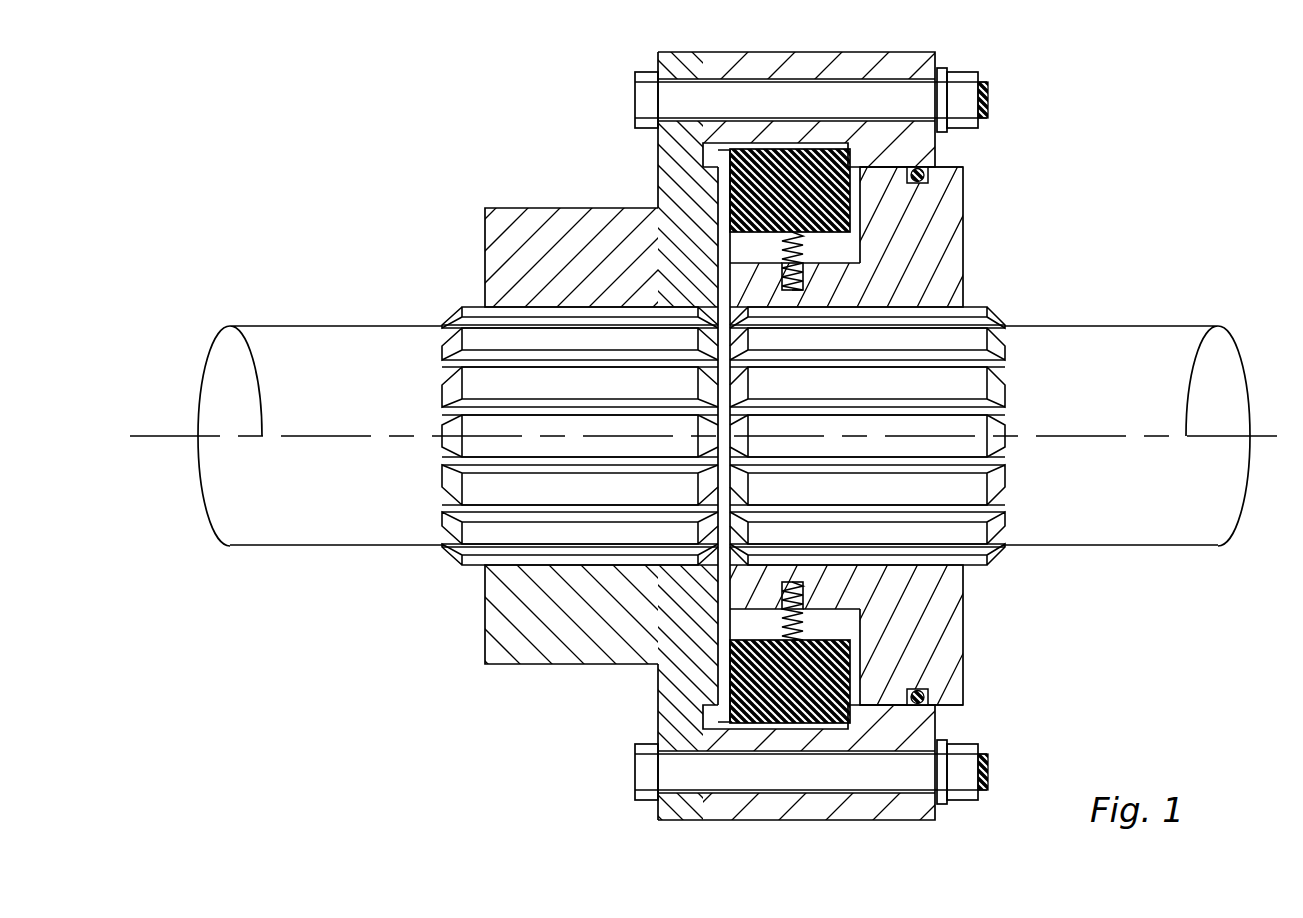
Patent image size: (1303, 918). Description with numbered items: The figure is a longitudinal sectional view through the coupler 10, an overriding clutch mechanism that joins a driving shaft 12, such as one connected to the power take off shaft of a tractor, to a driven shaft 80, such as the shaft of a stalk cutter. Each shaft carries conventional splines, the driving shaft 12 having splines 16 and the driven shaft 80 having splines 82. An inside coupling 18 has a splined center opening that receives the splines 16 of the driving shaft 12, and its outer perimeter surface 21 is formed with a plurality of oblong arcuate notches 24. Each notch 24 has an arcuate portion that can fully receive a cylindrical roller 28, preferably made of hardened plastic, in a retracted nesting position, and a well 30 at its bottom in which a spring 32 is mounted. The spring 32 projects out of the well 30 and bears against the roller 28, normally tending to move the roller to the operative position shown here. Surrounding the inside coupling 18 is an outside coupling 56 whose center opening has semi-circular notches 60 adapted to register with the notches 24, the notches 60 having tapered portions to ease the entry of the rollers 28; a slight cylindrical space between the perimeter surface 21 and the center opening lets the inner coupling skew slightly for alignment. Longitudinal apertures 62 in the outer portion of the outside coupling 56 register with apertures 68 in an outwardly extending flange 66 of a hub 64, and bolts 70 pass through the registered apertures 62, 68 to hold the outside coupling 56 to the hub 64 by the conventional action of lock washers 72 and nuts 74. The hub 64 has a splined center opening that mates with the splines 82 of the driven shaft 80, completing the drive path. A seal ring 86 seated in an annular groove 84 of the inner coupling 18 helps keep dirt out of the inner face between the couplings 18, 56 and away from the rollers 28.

The coupler 10 is at (405, 82).
The driving shaft 12 is at (1182, 312).
The splines 16 is at (1003, 457).
The inside coupling 18 is at (963, 243).
The outer perimeter surface 21 is at (957, 167).
The notches 24 is at (845, 622).
The rollers 28 is at (728, 200).
The well 30 is at (745, 285).
The spring 32 is at (782, 270).
The outside coupling 56 is at (833, 52).
The semi-circular notches 60 is at (716, 718).
The longitudinal apertures 62 is at (890, 790).
The hub 64 is at (655, 715).
The flange 66 is at (673, 52).
The apertures 68 is at (715, 92).
The bolts 70 is at (635, 97).
The lock washers 72 is at (940, 68).
The nuts 74 is at (960, 73).
The driven shaft 80 is at (288, 324).
The splines 82 is at (528, 337).
The annular groove 84 is at (935, 163).
The seal ring 86 is at (918, 168).